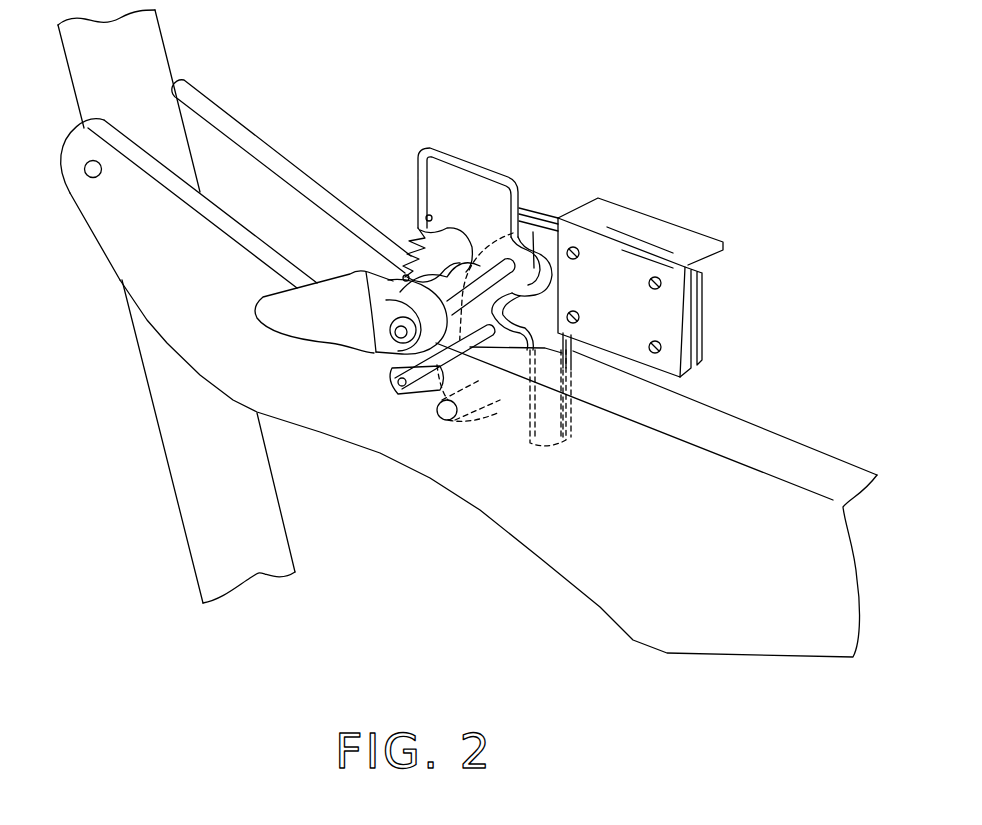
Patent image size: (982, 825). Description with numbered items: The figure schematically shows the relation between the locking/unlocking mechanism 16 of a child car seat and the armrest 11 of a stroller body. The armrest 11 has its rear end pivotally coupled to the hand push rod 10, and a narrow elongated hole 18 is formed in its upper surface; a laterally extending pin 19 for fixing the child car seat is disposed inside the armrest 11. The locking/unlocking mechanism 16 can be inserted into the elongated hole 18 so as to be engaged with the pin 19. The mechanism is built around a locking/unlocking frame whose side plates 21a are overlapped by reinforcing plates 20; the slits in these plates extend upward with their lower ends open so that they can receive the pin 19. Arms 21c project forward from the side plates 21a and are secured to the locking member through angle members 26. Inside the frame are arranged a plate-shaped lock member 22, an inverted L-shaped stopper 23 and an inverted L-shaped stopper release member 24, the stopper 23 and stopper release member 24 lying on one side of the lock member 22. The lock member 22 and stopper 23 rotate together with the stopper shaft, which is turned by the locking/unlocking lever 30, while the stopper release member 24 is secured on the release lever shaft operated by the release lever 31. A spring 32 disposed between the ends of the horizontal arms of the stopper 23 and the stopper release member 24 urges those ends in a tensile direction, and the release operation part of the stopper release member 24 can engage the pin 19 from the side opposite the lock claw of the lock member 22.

The hand push rod 10 is at (133, 43).
The armrest 11 is at (556, 513).
The locking/unlocking mechanism 16 is at (593, 201).
The elongated hole 18 is at (577, 358).
The pin 19 is at (475, 400).
The reinforcing plate 20 is at (567, 212).
The side plate 21a is at (540, 213).
The arm 21c is at (688, 324).
The lock member 22 is at (530, 210).
The stopper 23 is at (457, 148).
The stopper release member 24 is at (570, 352).
The angle member 26 is at (693, 237).
The locking/unlocking lever 30 is at (313, 298).
The release lever 31 is at (415, 393).
The spring 32 is at (411, 220).